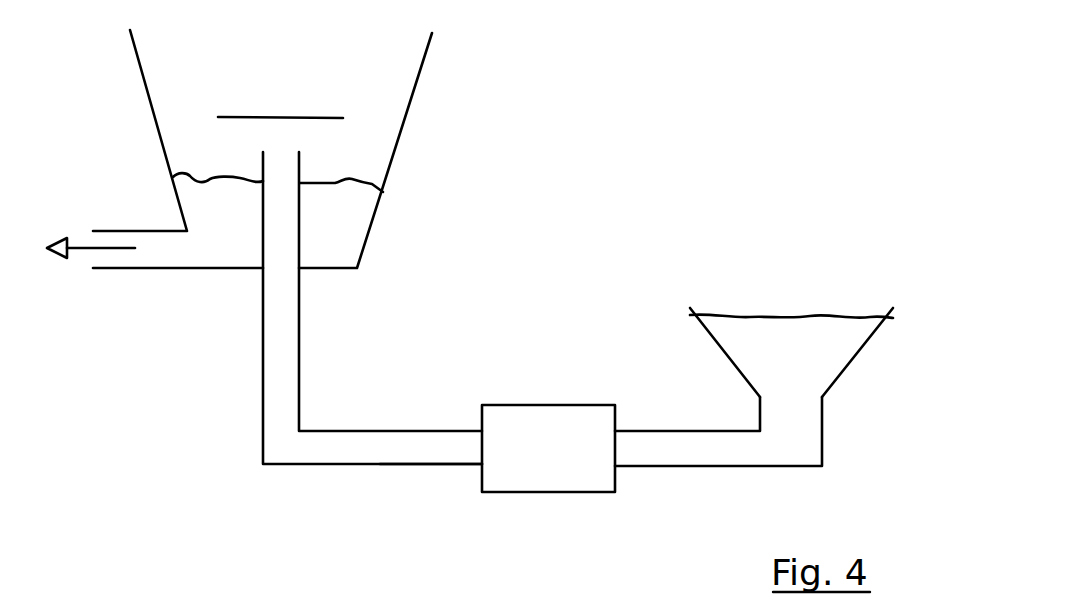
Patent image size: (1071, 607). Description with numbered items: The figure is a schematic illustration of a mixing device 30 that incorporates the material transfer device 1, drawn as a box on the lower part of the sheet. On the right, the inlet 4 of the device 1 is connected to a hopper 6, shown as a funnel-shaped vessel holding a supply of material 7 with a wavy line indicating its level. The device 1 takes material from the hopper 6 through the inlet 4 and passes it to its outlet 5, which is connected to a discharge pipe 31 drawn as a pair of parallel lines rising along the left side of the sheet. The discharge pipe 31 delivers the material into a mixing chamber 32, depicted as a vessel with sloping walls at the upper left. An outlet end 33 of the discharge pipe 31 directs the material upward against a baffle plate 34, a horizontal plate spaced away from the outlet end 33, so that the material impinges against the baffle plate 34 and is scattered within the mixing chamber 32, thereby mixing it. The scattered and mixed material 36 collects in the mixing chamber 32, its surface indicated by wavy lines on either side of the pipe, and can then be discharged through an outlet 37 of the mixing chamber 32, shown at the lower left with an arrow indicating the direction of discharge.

The material transfer device 1 is at (525, 480).
The inlet 4 is at (720, 450).
The outlet 5 is at (447, 450).
The hopper 6 is at (700, 318).
The material 7 is at (745, 346).
The mixing device 30 is at (399, 149).
The discharge pipe 31 is at (275, 380).
The mixing chamber 32 is at (417, 95).
The outlet end 33 is at (285, 165).
The baffle plate 34 is at (295, 115).
The mixed material 36 is at (197, 215).
The outlet 37 is at (145, 256).